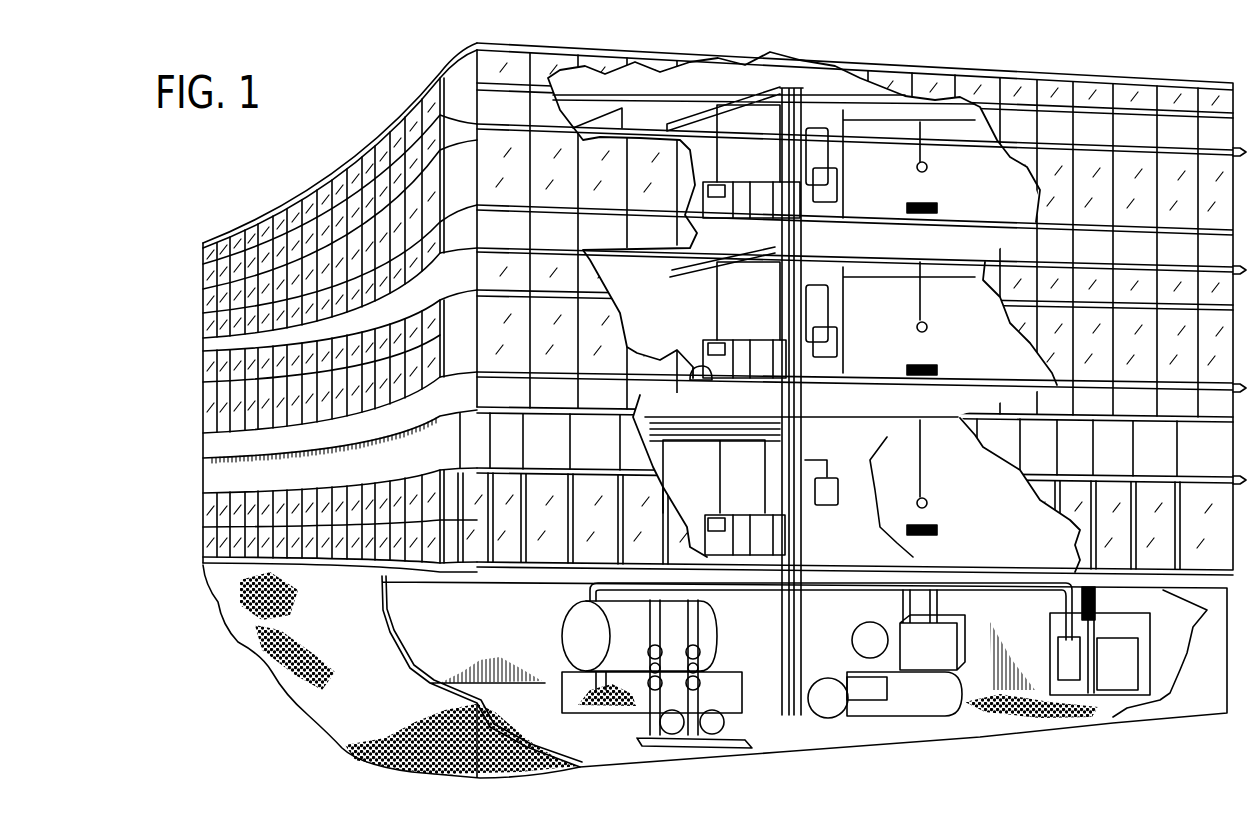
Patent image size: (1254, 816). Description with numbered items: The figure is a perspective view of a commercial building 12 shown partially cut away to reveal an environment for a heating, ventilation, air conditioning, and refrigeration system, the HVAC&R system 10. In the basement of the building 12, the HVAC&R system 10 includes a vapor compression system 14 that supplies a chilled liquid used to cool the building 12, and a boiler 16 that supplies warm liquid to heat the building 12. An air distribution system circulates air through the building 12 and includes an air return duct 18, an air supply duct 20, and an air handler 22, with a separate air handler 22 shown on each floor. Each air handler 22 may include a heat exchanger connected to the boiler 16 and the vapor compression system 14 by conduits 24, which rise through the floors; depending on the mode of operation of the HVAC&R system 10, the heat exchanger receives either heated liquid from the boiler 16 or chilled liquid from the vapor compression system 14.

The HVAC&R system 10 is at (1003, 745).
The building 12 is at (1101, 74).
The vapor compression system 14 is at (910, 698).
The boiler 16 is at (568, 632).
The air return duct 18 is at (702, 372).
The air supply duct 20 is at (757, 106).
The air handler 22 is at (742, 338).
The conduits 24 is at (802, 545).